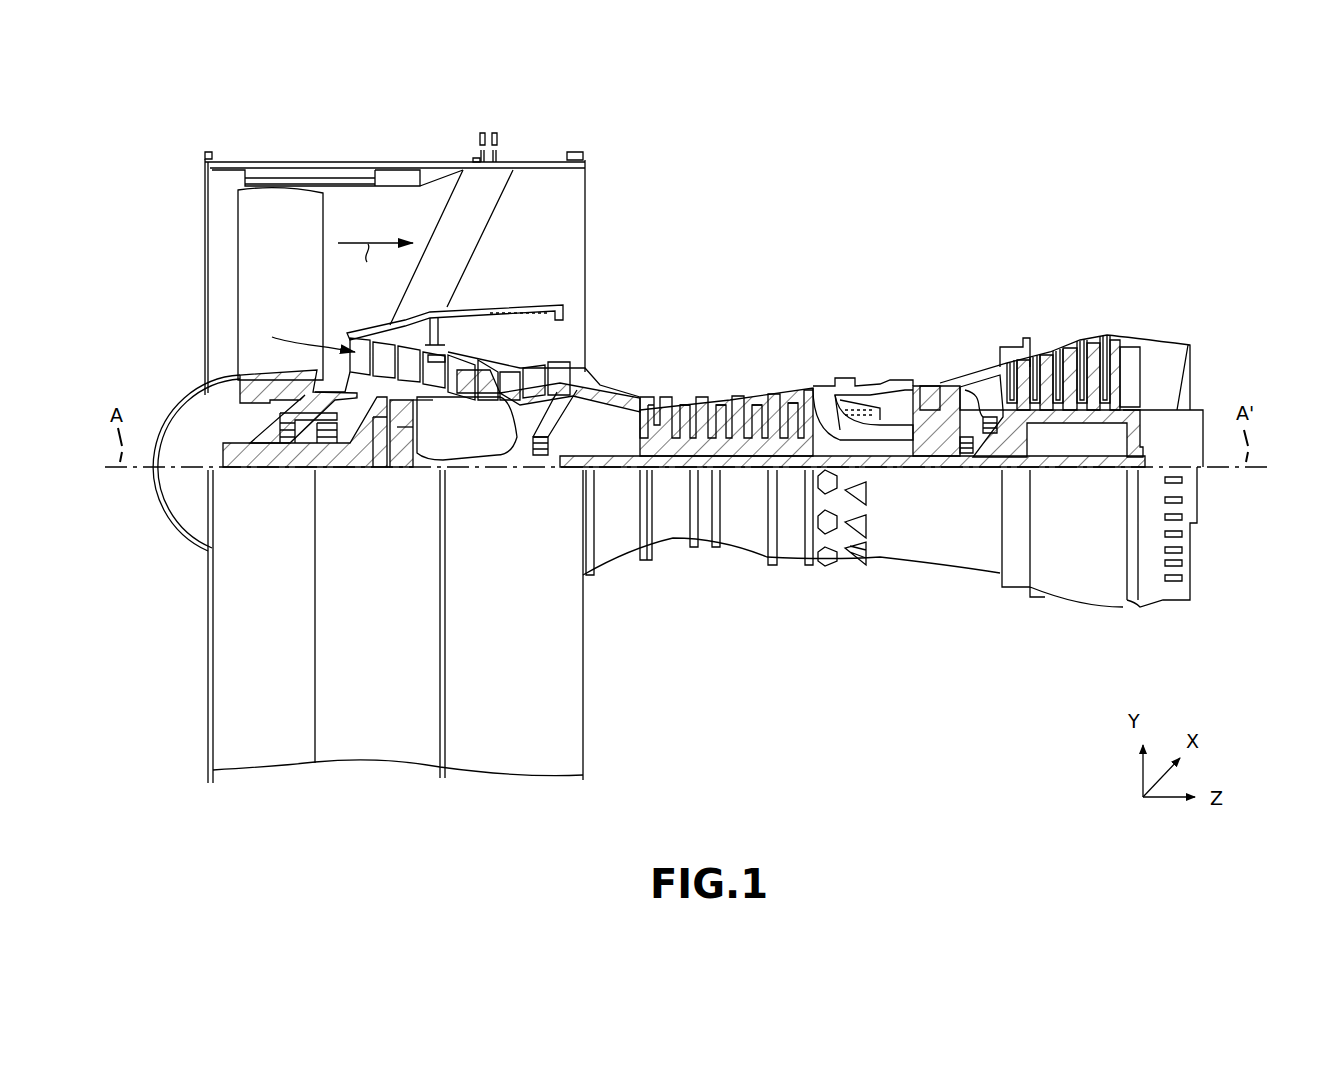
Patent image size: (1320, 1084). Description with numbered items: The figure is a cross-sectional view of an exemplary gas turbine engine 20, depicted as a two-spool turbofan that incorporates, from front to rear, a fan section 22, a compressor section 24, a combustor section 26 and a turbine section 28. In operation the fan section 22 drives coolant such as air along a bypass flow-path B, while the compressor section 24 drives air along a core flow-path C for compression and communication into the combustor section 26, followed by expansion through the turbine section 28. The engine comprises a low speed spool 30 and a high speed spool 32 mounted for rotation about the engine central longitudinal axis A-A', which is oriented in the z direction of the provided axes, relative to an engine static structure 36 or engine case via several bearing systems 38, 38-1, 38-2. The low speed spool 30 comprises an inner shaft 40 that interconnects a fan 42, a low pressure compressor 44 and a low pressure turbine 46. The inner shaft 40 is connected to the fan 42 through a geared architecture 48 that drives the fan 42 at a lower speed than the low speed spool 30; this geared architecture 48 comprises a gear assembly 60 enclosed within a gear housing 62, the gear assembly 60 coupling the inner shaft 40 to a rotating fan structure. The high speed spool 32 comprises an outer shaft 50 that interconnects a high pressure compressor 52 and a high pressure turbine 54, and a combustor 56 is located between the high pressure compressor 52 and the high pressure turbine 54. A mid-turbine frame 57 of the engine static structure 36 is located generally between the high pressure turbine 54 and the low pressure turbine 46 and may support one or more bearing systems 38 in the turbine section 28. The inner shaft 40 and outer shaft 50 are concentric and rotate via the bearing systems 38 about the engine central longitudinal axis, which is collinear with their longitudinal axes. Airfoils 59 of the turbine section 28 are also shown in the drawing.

The gas turbine engine 20 is at (918, 192).
The fan section 22 is at (441, 146).
The compressor section 24 is at (450, 273).
The combustor section 26 is at (920, 273).
The turbine section 28 is at (1130, 273).
The low speed spool 30 is at (752, 485).
The high speed spool 32 is at (790, 435).
The engine static structure 36 is at (375, 745).
The bearing system 38 is at (975, 468).
The bearing system 38-1 is at (292, 450).
The bearing system 38-2 is at (538, 455).
The inner shaft 40 is at (608, 478).
The fan 42 is at (280, 284).
The low pressure compressor 44 is at (535, 372).
The low pressure turbine 46 is at (1063, 350).
The geared architecture 48 is at (405, 490).
The outer shaft 50 is at (870, 460).
The high pressure compressor 52 is at (732, 435).
The high pressure turbine 54 is at (938, 385).
The combustor 56 is at (862, 400).
The mid-turbine frame 57 is at (972, 378).
The airfoils / vanes 59 is at (985, 395).
The gear assembly 60 is at (413, 450).
The gear housing 62 is at (413, 423).